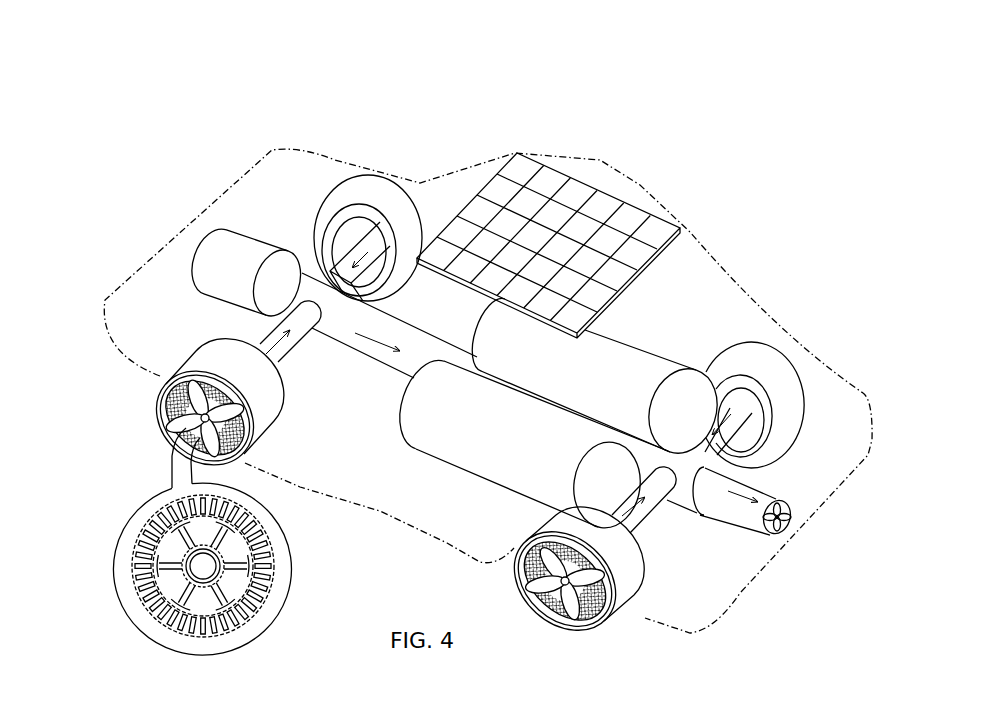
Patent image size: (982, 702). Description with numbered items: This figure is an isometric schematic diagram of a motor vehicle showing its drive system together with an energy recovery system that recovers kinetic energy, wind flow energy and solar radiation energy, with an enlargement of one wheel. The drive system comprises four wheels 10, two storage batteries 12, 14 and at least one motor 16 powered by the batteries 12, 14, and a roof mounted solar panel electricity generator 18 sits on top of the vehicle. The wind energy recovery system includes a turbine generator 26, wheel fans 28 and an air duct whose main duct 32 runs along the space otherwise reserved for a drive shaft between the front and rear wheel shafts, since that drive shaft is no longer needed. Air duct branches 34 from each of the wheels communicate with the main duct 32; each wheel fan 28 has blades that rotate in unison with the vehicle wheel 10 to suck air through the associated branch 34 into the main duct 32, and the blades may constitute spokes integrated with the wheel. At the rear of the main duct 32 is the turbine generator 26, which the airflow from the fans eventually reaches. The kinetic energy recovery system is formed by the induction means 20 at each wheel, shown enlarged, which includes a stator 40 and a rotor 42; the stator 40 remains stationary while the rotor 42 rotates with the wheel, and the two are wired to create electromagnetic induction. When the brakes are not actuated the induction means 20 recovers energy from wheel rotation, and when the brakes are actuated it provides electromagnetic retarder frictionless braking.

The wheel 10 is at (348, 175).
The storage battery 12 is at (554, 432).
The storage battery 14 is at (640, 366).
The motor 16 is at (265, 250).
The roof mounted solar panel electricity generator 18 is at (556, 178).
The induction means 20 is at (112, 521).
The turbine generator 26 is at (791, 497).
The wheel fan 28 is at (182, 418).
The main duct 32 is at (398, 312).
The air duct branch 34 is at (362, 246).
The stator 40 is at (197, 567).
The rotor 42 is at (130, 603).